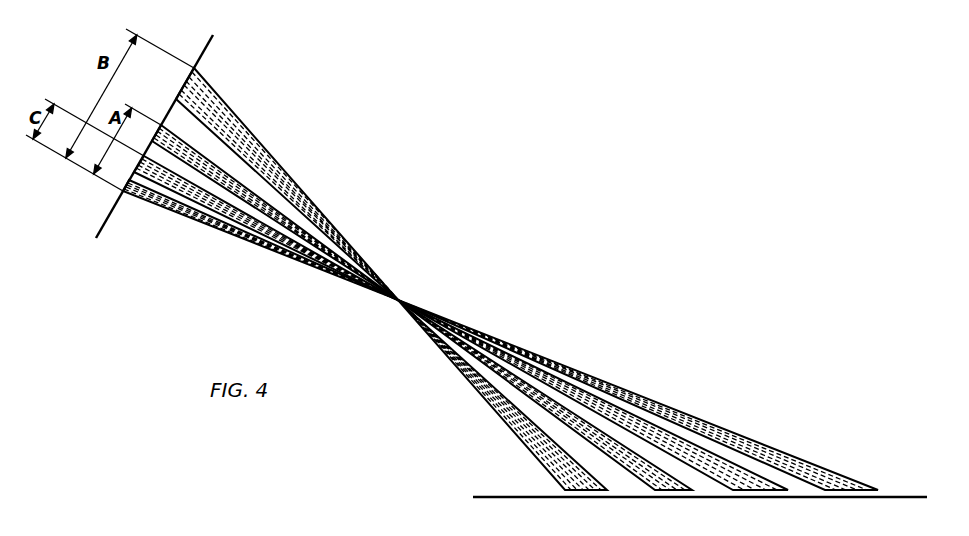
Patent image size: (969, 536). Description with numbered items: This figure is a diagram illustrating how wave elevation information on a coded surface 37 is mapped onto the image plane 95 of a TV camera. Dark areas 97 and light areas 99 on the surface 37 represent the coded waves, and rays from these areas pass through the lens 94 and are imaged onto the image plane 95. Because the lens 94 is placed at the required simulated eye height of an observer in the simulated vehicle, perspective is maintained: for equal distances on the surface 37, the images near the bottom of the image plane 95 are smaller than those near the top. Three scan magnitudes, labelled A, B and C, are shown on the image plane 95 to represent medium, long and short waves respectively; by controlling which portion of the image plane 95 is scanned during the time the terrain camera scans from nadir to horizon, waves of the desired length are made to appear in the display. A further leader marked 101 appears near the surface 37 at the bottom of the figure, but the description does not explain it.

The image plane 95 is at (208, 46).
The lens 94 is at (399, 298).
The surface 37 is at (521, 496).
The dark areas 97 is at (587, 491).
The light areas 99 is at (633, 488).
The beam spot position indicator 101 is at (455, 532).